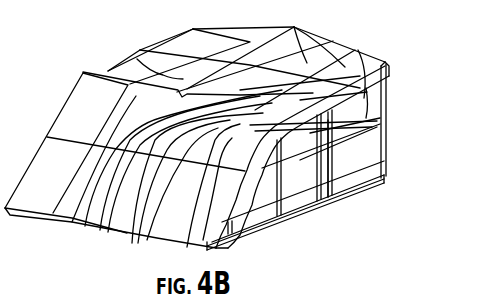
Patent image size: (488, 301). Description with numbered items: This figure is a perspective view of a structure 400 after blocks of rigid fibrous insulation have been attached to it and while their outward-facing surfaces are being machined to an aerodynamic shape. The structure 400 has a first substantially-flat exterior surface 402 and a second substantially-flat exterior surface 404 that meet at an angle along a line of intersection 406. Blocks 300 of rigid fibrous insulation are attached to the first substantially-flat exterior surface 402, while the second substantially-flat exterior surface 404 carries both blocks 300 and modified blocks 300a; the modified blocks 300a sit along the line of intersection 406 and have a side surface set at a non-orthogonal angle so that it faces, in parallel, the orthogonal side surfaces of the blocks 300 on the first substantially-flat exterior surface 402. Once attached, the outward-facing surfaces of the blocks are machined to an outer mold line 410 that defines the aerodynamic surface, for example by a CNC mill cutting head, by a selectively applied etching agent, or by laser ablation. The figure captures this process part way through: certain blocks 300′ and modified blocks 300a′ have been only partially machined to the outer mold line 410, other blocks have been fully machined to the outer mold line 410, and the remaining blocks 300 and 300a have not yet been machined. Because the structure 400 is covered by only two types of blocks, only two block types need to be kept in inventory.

The block of rigid fibrous insulation 300 is at (297, 22).
The modified block 300a is at (130, 78).
The partially machined block 300′ is at (84, 215).
The partially machined modified block 300a′ is at (377, 122).
The structure 400 is at (387, 184).
The first substantially-flat exterior surface 402 is at (250, 194).
The second substantially-flat exterior surface 404 is at (364, 91).
The line of intersection 406 is at (332, 160).
The outer mold line 410 is at (376, 66).